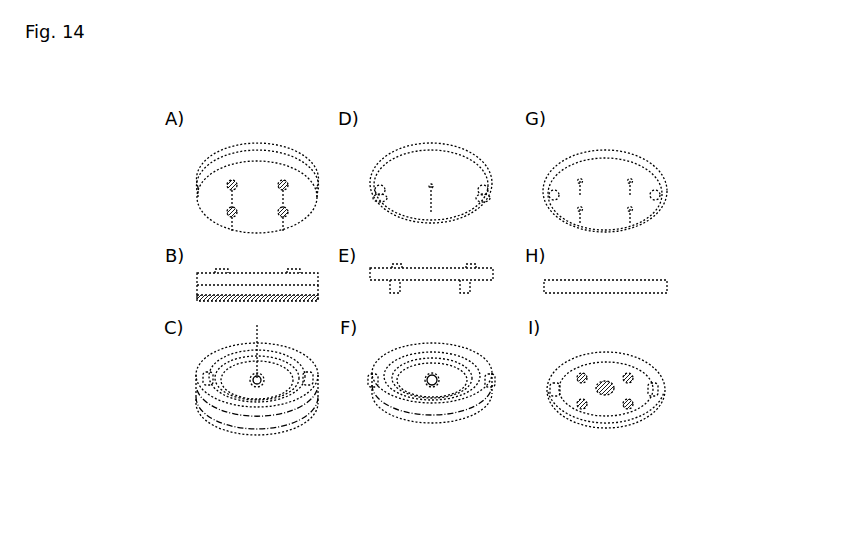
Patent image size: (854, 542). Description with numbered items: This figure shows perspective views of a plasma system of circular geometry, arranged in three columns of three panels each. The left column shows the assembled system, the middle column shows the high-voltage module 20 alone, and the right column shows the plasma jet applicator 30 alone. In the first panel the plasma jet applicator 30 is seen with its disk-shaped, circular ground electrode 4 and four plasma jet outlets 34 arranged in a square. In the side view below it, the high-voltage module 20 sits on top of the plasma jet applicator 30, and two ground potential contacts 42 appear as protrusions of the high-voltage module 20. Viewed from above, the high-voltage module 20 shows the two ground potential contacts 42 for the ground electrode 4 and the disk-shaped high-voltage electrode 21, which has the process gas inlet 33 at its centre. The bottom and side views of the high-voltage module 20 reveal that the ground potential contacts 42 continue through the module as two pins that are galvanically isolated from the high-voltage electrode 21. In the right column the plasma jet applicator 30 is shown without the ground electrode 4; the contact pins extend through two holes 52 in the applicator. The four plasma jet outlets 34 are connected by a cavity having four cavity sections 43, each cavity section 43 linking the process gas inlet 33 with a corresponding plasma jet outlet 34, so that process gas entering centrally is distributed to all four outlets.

The ground electrode 4 is at (213, 199).
The high-voltage module 20 is at (221, 150).
The high-voltage electrode 21 is at (424, 387).
The plasma jet applicator 30 is at (213, 172).
The process gas inlet 33 is at (255, 377).
The plasma jet outlets 34 is at (283, 184).
The ground potential contacts 42 is at (470, 292).
The cavity sections 43 is at (632, 404).
The holes 52 is at (556, 393).